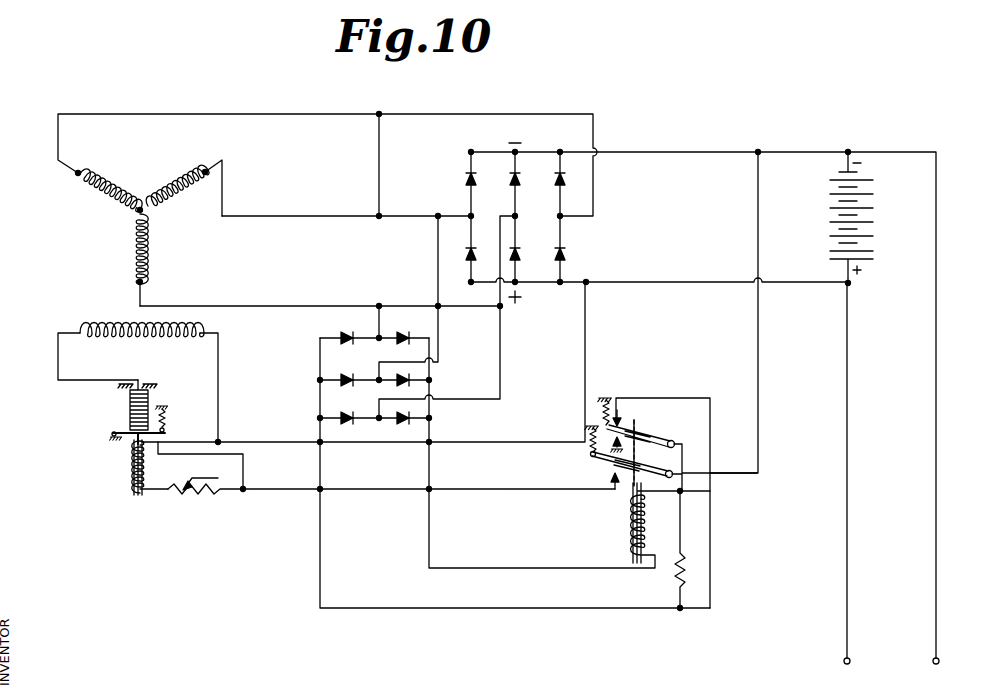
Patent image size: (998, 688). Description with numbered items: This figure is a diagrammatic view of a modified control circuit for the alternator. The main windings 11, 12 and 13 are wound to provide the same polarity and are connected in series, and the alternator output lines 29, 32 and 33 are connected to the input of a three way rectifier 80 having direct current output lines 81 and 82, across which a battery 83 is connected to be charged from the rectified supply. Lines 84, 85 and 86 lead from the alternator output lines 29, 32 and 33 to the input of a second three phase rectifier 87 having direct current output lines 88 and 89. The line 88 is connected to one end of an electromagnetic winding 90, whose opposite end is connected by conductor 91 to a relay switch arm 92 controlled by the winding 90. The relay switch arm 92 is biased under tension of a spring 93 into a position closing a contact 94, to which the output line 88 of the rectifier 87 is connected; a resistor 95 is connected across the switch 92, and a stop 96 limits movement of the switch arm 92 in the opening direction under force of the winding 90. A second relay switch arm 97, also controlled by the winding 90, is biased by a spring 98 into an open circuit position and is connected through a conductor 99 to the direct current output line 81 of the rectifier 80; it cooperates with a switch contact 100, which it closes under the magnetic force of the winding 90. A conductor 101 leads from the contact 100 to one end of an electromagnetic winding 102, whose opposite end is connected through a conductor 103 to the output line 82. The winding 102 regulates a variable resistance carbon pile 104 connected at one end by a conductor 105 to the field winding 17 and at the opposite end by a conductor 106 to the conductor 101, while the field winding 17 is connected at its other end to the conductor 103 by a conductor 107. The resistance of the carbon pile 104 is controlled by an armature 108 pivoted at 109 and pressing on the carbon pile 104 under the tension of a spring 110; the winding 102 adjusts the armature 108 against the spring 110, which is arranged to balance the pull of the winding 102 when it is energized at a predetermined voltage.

The main winding 11 is at (178, 196).
The main winding 12 is at (137, 252).
The main winding 13 is at (100, 178).
The field coil 17 is at (152, 336).
The alternator output line 29 is at (262, 305).
The alternator output line 32 is at (300, 215).
The alternator output line 33 is at (210, 113).
The three way rectifier 80 is at (562, 232).
The direct current output line 81 is at (738, 152).
The direct current output line 82 is at (690, 283).
The battery 83 is at (873, 225).
The line 84 is at (380, 182).
The line 85 is at (438, 262).
The line 86 is at (502, 352).
The second three phase rectifier 87 is at (318, 360).
The direct current output line 88 is at (320, 550).
The direct current output line 89 is at (432, 531).
The electromagnetic winding 90 is at (630, 530).
The conductor 91 is at (683, 452).
The relay switch arm 92 is at (650, 440).
The spring 93 is at (600, 412).
The contact 94 is at (621, 423).
The resistor 95 is at (678, 578).
The stop 96 is at (624, 445).
The second relay switch arm 97 is at (600, 461).
The spring 98 is at (590, 448).
The conductor 99 is at (758, 370).
The switch contact 100 is at (610, 481).
The conductor 101 is at (525, 492).
The electromagnetic winding 102 is at (132, 465).
The conductor 103 is at (372, 444).
The variable resistance carbon pile 104 is at (130, 406).
The conductor 105 is at (58, 362).
The conductor 106 is at (245, 470).
The conductor 107 is at (220, 400).
The armature 108 is at (123, 433).
The pivot 109 is at (114, 438).
The spring 110 is at (168, 418).